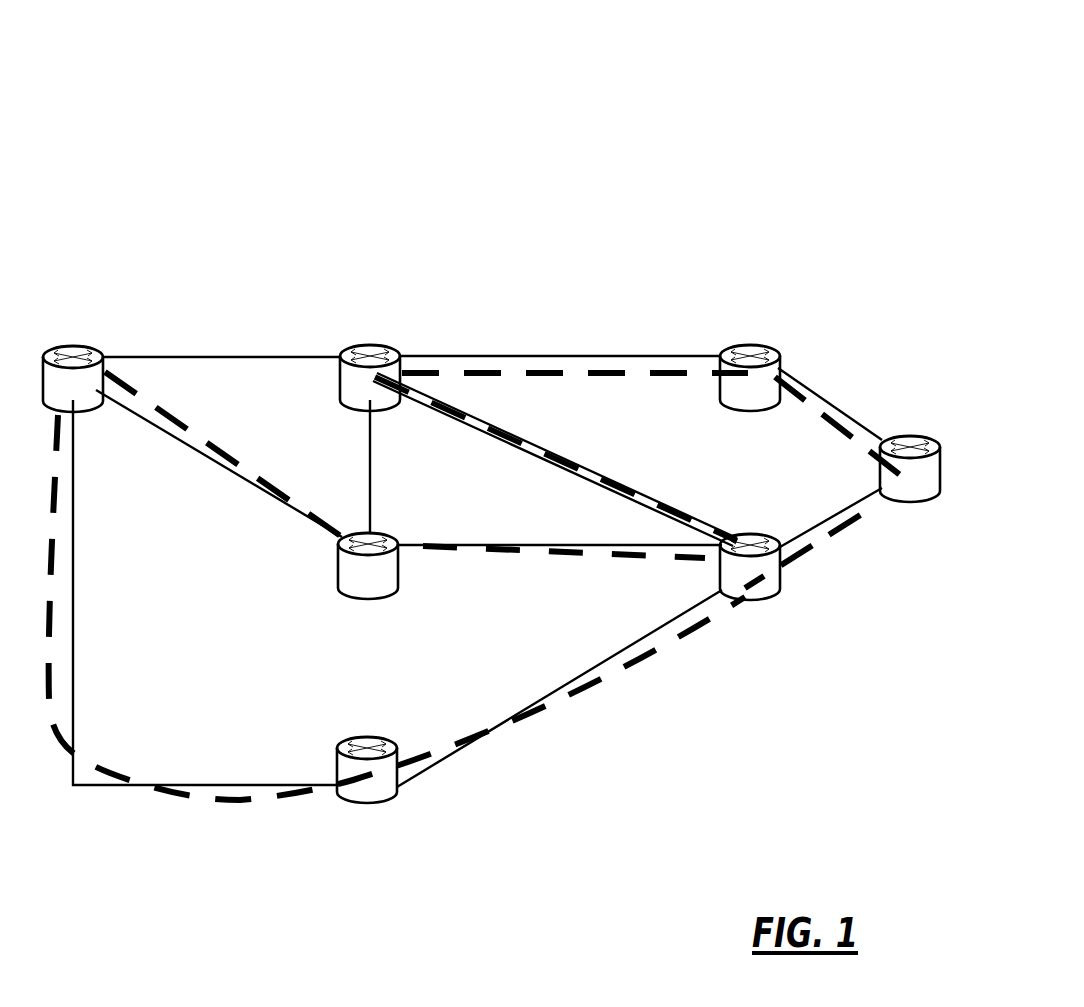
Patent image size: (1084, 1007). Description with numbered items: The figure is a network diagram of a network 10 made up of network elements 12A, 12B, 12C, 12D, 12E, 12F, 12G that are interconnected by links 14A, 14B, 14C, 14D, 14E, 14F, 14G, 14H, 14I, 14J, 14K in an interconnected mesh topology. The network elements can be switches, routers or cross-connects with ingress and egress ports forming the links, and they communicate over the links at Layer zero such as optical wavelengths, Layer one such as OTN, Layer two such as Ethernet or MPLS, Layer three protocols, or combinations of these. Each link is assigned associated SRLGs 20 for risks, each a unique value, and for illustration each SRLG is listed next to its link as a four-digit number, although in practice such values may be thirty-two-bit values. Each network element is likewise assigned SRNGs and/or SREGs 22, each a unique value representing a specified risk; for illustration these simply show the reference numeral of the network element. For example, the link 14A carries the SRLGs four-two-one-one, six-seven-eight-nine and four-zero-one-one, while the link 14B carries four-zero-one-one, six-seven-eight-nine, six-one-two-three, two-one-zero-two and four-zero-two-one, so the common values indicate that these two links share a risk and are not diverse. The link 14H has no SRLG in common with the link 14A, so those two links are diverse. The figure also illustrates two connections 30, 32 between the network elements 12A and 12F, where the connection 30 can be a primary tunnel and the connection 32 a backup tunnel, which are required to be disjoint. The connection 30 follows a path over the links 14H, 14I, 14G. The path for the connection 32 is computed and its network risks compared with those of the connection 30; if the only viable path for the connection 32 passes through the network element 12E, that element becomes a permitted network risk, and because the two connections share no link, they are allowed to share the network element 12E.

The network 10 is at (551, 68).
The network element 12A is at (78, 345).
The network element 12B is at (374, 345).
The network element 12C is at (759, 345).
The network element 12D is at (348, 598).
The network element 12E is at (752, 601).
The network element 12F is at (910, 503).
The network element 12G is at (343, 801).
The link 14A is at (300, 358).
The link 14B is at (660, 358).
The link 14C is at (800, 372).
The link 14D is at (165, 437).
The link 14E is at (367, 427).
The link 14F is at (447, 549).
The link 14G is at (813, 528).
The link 14H is at (75, 643).
The link 14I is at (543, 697).
The link 14J is at (683, 508).
The link 14K is at (730, 527).
The SRLGs 20 is at (576, 290).
The SRNGs and/or SREGs 22 is at (146, 272).
The connection 30 is at (203, 797).
The connection 32 is at (243, 462).